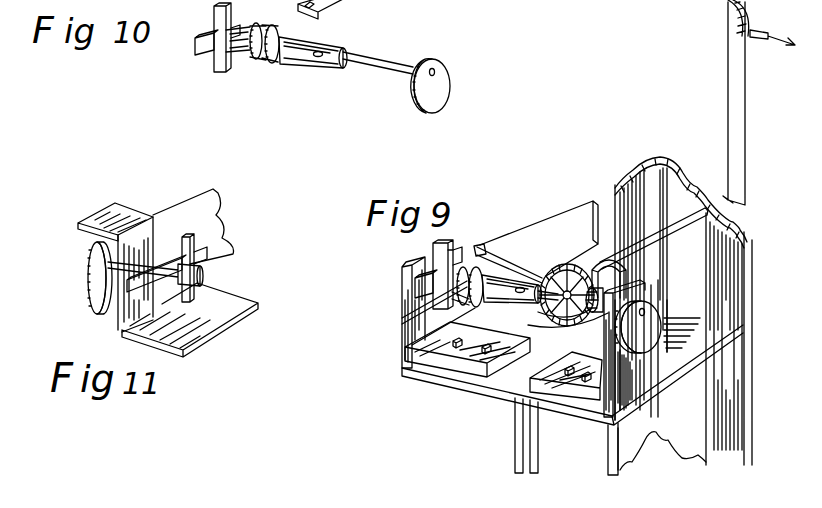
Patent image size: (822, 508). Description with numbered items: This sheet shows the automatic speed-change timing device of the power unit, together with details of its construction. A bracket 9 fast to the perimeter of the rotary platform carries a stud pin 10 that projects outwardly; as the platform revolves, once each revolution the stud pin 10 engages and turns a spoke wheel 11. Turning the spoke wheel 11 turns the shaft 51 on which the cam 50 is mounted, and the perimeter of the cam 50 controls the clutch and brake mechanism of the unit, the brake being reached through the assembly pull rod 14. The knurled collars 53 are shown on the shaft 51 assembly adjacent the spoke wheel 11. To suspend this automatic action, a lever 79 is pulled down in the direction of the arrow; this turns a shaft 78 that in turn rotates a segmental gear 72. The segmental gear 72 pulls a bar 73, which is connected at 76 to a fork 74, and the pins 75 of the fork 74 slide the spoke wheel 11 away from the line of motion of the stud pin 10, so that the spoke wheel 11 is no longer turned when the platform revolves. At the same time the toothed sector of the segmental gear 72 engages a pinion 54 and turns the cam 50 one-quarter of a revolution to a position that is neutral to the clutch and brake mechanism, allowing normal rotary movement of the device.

In FIG. 11, the bracket 9 is at (110, 251).
In FIG. 11, the stud pin 10 is at (110, 264).
In FIG. 10, the spoke wheel 11 is at (213, 55).
In FIG. 11, the spoke wheel 11 is at (207, 270).
In FIG. 9, the spoke wheel 11 is at (433, 252).
In FIG. 10, the assembly pull rod 14 is at (357, 3).
In FIG. 10, the cam 50 is at (440, 90).
In FIG. 9, the cam 50 is at (650, 328).
In FIG. 10, the shaft 51 is at (387, 63).
In FIG. 9, the shaft 51 is at (460, 355).
In FIG. 10, the knurled collars 53 is at (268, 58).
In FIG. 9, the knurled collars 53 is at (462, 302).
In FIG. 9, the pinion 54 is at (550, 372).
In FIG. 9, the segmental gear 72 is at (550, 338).
In FIG. 9, the bar 73 is at (507, 270).
In FIG. 9, the fork 74 is at (530, 250).
In FIG. 9, the pins 75 is at (463, 307).
In FIG. 9, the connection 76 is at (478, 247).
In FIG. 9, the shaft 78 is at (713, 228).
In FIG. 9, the lever 79 is at (733, 48).